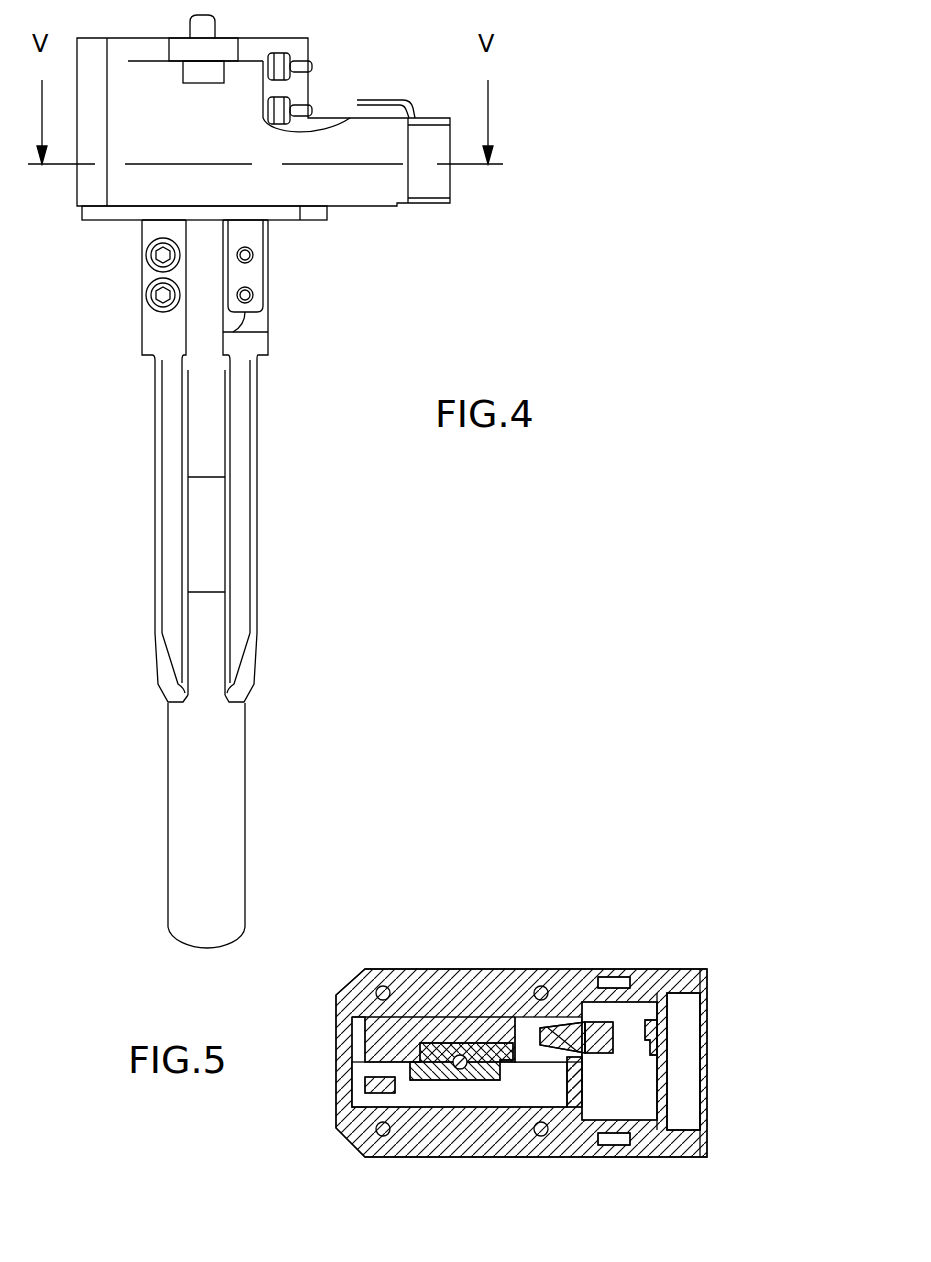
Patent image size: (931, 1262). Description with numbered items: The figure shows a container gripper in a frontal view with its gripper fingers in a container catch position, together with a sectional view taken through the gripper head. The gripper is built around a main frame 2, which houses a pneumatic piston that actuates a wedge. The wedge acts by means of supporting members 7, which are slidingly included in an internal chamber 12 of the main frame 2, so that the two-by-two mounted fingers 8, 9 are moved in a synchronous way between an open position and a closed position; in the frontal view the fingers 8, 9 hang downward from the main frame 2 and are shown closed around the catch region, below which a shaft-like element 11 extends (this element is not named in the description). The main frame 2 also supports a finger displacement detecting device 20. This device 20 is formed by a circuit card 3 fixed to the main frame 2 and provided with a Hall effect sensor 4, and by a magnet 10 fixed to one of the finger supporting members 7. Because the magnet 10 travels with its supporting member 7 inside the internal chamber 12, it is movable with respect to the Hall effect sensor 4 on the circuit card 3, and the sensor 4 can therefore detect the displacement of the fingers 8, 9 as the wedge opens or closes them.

In FIG. 4, the main frame 2 is at (122, 205).
In FIG. 4, the finger displacement detecting device 20 is at (420, 110).
In FIG. 5, the finger displacement detecting device 20 is at (688, 1020).
In FIG. 4, the finger 8 is at (172, 513).
In FIG. 4, the finger 9 is at (243, 488).
In FIG. 4, the shaft 11 is at (245, 766).
In FIG. 5, the supporting member 7 is at (536, 1025).
In FIG. 5, the magnet 10 is at (605, 1030).
In FIG. 5, the Hall effect sensor 4 is at (648, 1040).
In FIG. 5, the internal chamber 12 is at (568, 1097).
In FIG. 5, the circuit card 3 is at (663, 1080).